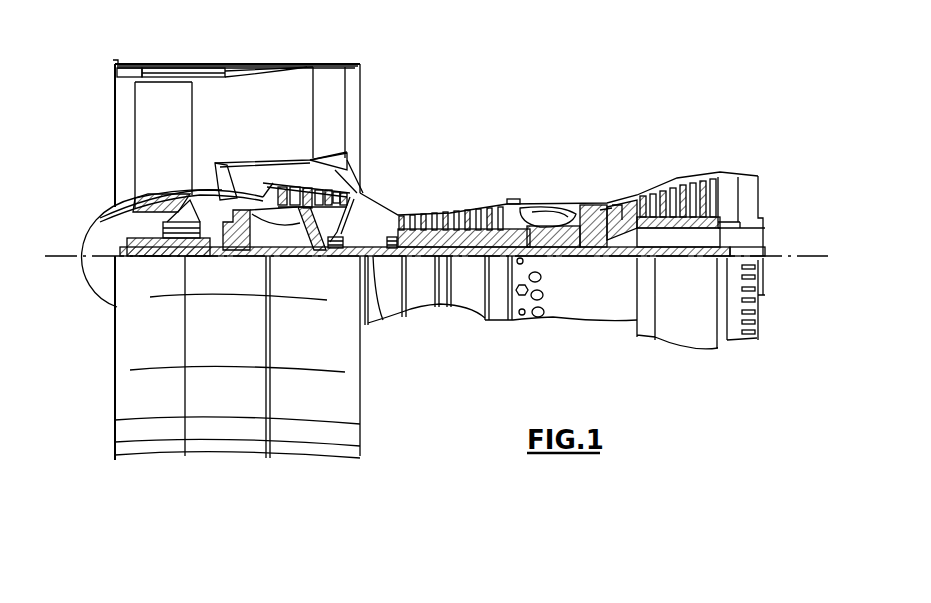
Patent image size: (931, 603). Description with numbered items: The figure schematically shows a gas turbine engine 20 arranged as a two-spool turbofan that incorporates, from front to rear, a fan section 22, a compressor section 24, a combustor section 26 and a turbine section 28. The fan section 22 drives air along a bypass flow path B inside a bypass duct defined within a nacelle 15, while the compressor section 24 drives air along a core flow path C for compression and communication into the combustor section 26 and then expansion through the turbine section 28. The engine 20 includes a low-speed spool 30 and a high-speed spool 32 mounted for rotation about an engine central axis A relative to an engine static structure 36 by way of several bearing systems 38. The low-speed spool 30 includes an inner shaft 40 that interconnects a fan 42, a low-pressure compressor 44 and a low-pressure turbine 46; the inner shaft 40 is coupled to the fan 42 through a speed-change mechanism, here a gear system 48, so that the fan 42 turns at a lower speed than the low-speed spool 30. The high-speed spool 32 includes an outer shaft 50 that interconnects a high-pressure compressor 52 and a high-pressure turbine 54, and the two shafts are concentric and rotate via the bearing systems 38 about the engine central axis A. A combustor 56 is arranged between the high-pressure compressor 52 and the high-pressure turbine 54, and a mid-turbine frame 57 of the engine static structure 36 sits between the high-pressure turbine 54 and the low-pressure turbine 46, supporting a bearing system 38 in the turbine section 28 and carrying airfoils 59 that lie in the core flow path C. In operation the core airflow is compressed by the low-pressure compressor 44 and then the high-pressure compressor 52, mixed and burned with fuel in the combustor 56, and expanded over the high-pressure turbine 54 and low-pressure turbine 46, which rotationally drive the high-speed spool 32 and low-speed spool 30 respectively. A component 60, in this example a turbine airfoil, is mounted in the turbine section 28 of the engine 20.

The gas turbine engine 20 is at (554, 97).
The fan section 22 is at (191, 57).
The nacelle 15 is at (240, 63).
The fan 42 is at (177, 151).
The low-pressure compressor 44 is at (345, 167).
The compressor section 24 is at (398, 188).
The high-pressure compressor 52 is at (447, 225).
The high-speed spool 32 is at (498, 213).
The combustor section 26 is at (549, 184).
The combustor 56 is at (552, 206).
The mid-turbine frame 57 is at (625, 192).
The high-pressure turbine 54 is at (601, 200).
The turbine section 28 is at (650, 157).
The low-pressure turbine 46 is at (684, 172).
The component 60 is at (703, 172).
The airfoils 59 is at (637, 217).
The gear system 48 is at (242, 250).
The bearing systems 38 is at (335, 253).
The inner shaft 40 is at (381, 316).
The low-speed spool 30 is at (470, 262).
The engine static structure 36 is at (497, 318).
The outer shaft 50 is at (553, 258).
The engine central axis A is at (823, 255).
The bypass flow path B is at (218, 115).
The core flow path C is at (238, 186).